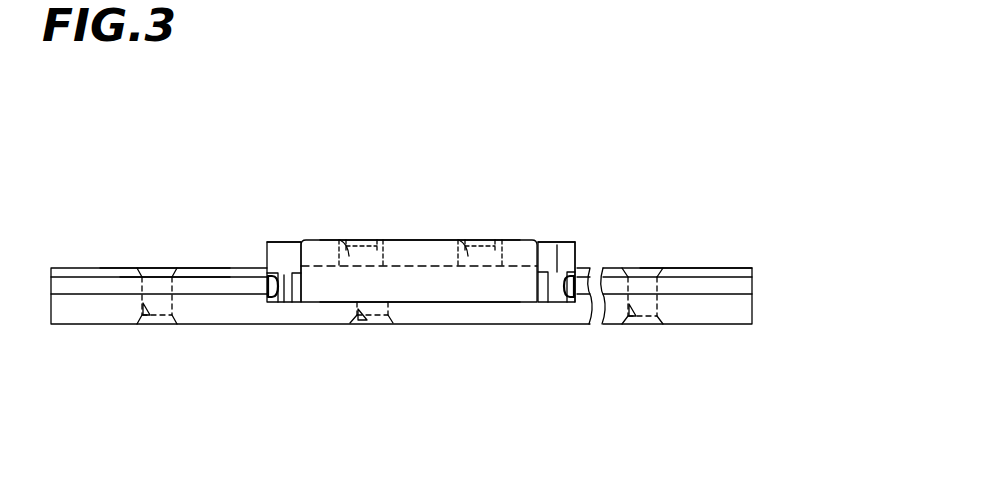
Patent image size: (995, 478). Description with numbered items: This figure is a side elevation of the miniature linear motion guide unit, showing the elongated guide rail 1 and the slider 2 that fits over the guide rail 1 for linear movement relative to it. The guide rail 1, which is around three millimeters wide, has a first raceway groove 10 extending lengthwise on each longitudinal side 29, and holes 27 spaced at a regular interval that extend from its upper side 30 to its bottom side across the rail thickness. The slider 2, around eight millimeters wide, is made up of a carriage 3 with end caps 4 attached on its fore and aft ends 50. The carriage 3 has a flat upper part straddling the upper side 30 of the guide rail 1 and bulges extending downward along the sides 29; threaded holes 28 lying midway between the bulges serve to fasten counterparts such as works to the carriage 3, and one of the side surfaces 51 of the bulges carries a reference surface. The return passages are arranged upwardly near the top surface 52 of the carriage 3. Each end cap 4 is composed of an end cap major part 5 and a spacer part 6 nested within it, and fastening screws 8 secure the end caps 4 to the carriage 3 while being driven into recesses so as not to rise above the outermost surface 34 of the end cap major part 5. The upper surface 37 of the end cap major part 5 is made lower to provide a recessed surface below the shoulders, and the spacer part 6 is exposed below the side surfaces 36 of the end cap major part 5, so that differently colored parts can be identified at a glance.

The guide rail 1 is at (208, 313).
The slider 2 is at (500, 229).
The carriage 3 is at (421, 247).
The end cap 4 is at (424, 269).
The end cap major part 5 is at (273, 250).
The spacer part 6 is at (292, 273).
The fastening screws 8 is at (265, 300).
The first raceway groove 10 is at (226, 285).
The holes 27 is at (153, 323).
The threaded holes 28 is at (352, 240).
The longitudinal sides 29 is at (697, 315).
The upper side 30 is at (192, 267).
The outermost surface 34 is at (578, 257).
The side surfaces 36 is at (557, 258).
The upper surface 37 is at (567, 245).
The fore and aft ends 50 is at (304, 240).
The side surfaces 51 is at (431, 287).
The top surface 52 is at (398, 240).